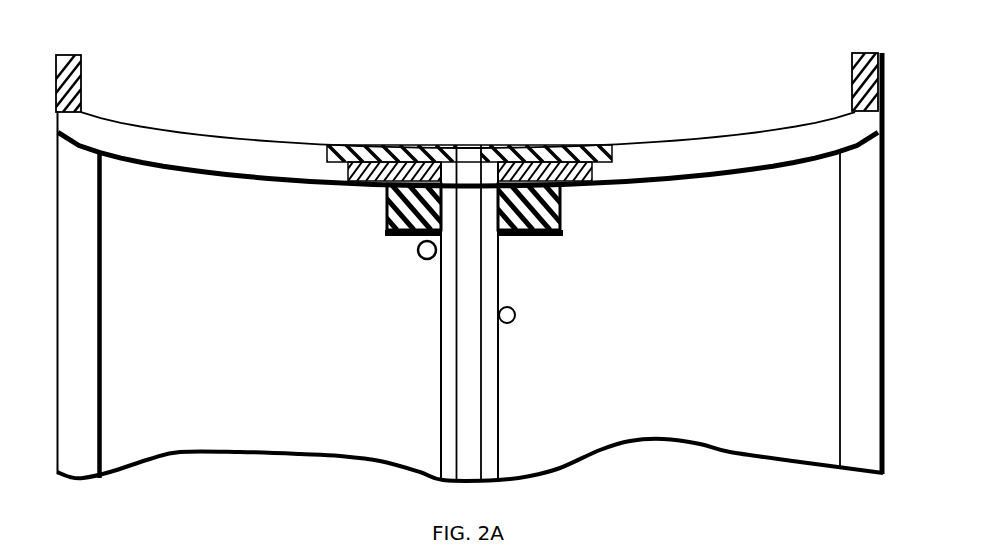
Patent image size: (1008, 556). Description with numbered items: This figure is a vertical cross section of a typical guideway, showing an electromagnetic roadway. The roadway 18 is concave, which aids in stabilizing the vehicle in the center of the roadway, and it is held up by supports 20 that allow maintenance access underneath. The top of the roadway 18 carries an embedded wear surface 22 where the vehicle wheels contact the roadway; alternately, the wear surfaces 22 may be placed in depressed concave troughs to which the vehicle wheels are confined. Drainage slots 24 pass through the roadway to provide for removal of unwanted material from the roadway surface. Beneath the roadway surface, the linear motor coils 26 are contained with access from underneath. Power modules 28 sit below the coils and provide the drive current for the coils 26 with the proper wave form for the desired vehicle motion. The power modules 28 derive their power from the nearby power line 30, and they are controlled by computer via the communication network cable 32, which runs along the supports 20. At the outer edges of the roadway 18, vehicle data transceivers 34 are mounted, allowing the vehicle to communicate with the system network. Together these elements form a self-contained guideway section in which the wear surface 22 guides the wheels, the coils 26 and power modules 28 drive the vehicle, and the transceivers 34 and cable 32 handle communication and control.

The roadway 18 is at (220, 157).
The supports 20 is at (88, 262).
The wear surface 22 is at (367, 150).
The drainage slots 24 is at (468, 150).
The linear motor coils 26 is at (352, 175).
The power modules 28 is at (388, 204).
The power line 30 is at (417, 252).
The communication network cable 32 is at (515, 312).
The vehicle data transceivers 34 is at (82, 73).